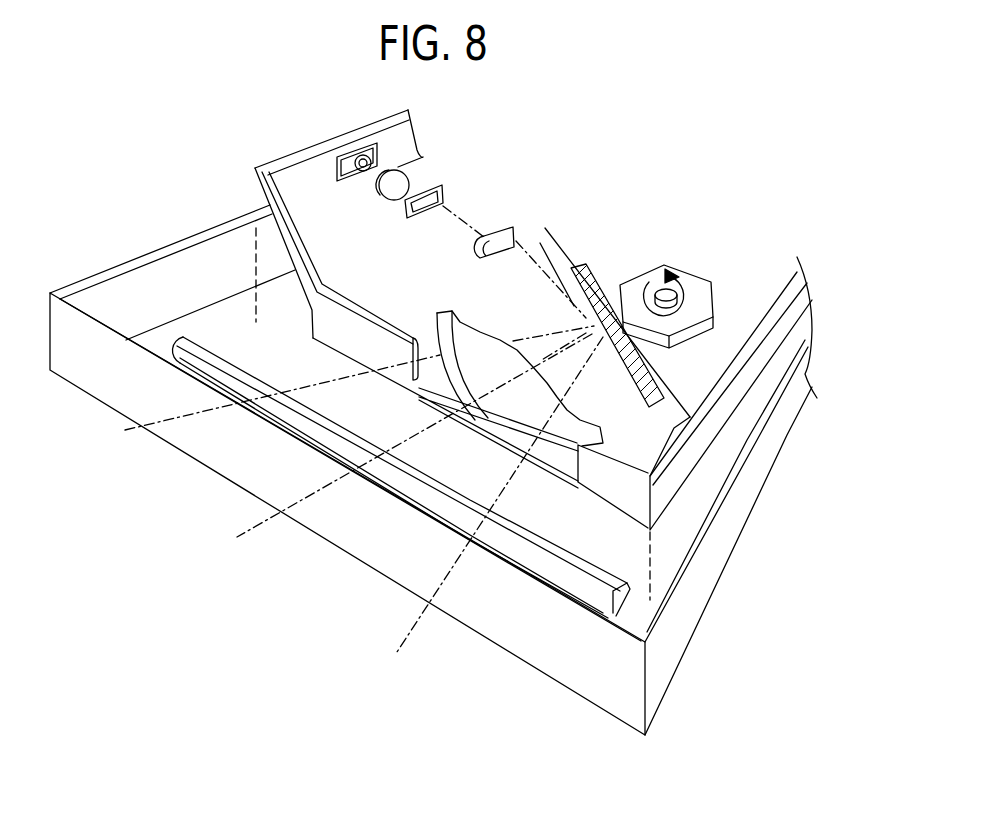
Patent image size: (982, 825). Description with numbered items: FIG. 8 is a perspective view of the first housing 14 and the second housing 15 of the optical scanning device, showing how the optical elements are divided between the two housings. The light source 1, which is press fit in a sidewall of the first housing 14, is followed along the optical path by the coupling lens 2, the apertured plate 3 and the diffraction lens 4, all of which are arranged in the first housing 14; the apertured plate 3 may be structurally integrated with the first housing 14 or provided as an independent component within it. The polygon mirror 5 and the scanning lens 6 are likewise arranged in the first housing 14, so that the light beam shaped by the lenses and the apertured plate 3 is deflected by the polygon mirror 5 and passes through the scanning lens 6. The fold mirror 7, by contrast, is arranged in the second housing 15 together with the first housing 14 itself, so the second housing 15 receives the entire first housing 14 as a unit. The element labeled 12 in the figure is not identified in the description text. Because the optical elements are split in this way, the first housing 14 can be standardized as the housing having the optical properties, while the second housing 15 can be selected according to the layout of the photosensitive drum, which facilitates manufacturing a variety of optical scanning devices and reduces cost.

The light source 1 is at (365, 126).
The coupling lens 2 is at (378, 196).
The apertured plate 3 is at (437, 182).
The diffraction lens 4 is at (505, 226).
The polygon mirror 5 is at (694, 272).
The scanning lens 6 is at (446, 308).
The fold mirror 7 is at (258, 379).
The deflecting mirror 12 is at (593, 273).
The first housing 14 is at (289, 152).
The second housing 15 is at (178, 240).